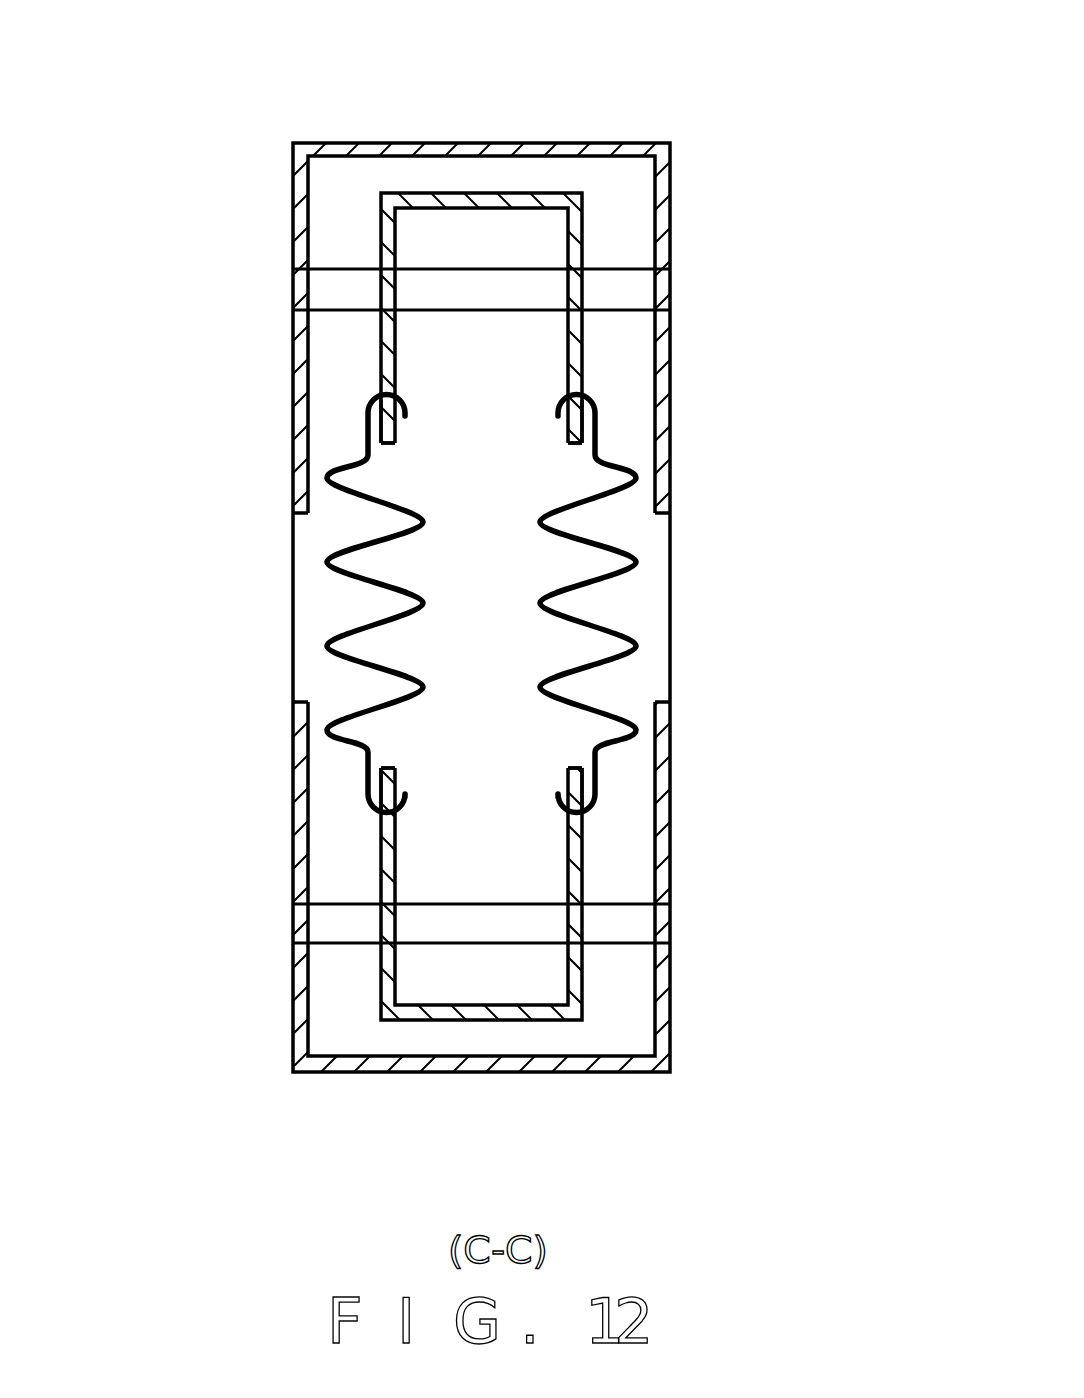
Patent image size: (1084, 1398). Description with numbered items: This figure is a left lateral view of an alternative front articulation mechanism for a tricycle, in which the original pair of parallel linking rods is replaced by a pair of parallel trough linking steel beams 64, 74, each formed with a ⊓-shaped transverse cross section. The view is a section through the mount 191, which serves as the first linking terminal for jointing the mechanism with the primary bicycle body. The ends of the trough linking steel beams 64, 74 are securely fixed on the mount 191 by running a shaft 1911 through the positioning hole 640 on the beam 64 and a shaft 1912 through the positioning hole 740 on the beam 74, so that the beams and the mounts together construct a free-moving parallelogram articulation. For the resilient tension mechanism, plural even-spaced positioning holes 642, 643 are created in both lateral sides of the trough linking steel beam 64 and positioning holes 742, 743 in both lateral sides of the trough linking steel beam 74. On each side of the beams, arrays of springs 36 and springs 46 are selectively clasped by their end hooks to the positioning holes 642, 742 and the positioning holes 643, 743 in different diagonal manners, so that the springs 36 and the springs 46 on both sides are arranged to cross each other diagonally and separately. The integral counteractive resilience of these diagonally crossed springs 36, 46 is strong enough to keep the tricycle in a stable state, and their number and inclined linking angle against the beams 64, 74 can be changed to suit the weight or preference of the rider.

The mount 191 is at (268, 678).
The trough linking steel beam 64 is at (466, 198).
The trough linking steel beam 74 is at (472, 1012).
The positioning hole 640 is at (582, 243).
The positioning hole 740 is at (388, 887).
The positioning hole 642 is at (388, 392).
The positioning hole 643 is at (580, 392).
The positioning hole 742 is at (388, 818).
The positioning hole 743 is at (580, 818).
The spring 36 is at (330, 560).
The spring 46 is at (636, 642).
The shaft 1911 is at (505, 293).
The shaft 1912 is at (472, 925).